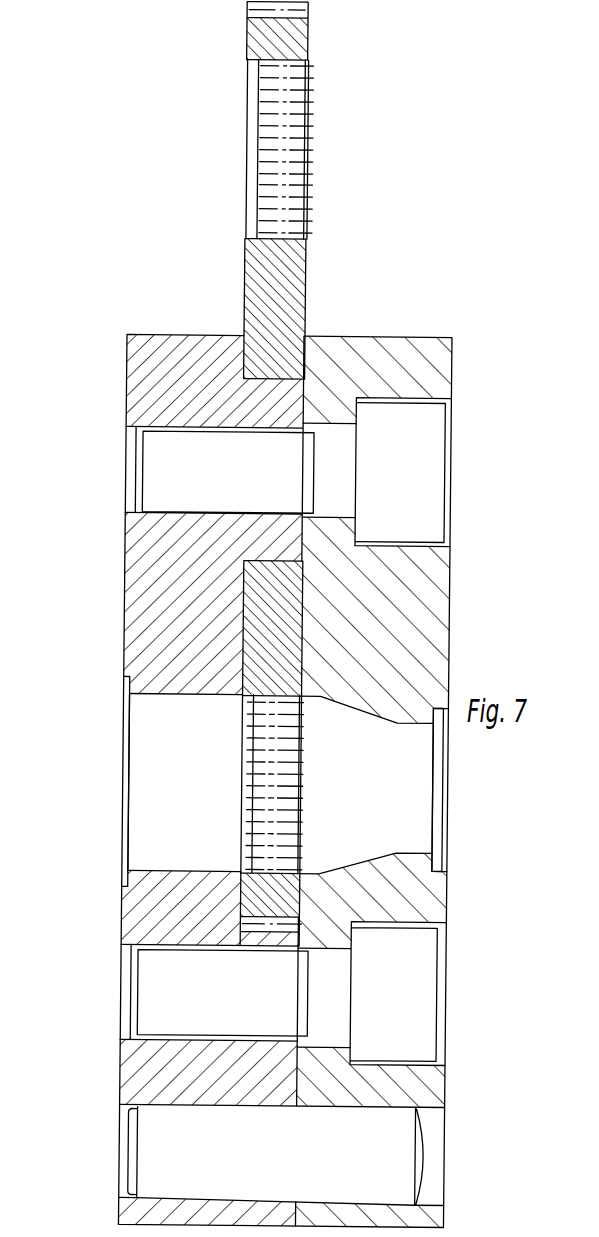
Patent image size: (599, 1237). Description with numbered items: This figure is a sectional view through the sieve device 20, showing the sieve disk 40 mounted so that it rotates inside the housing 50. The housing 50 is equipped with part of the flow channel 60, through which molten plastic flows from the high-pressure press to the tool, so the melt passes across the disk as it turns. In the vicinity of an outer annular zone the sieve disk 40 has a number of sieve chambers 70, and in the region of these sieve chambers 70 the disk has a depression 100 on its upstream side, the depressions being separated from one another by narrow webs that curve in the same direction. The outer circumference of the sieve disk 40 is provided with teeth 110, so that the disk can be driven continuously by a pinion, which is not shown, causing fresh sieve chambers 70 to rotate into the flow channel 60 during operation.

The sieve device 20 is at (108, 562).
The sieve disk 40 is at (223, 261).
The housing 50 is at (432, 584).
The flow channel 60 is at (152, 755).
The sieve chambers 70 is at (278, 129).
The depression 100 is at (250, 178).
The teeth 110 is at (308, 10).